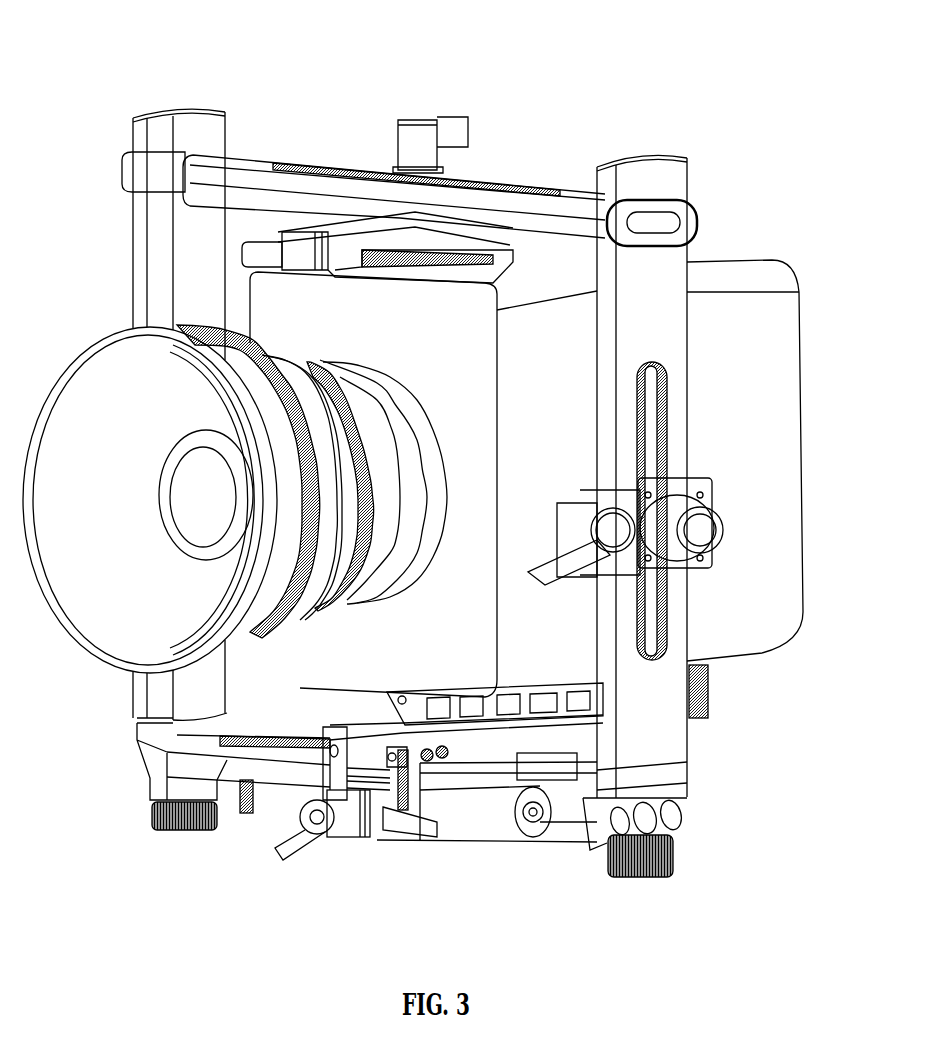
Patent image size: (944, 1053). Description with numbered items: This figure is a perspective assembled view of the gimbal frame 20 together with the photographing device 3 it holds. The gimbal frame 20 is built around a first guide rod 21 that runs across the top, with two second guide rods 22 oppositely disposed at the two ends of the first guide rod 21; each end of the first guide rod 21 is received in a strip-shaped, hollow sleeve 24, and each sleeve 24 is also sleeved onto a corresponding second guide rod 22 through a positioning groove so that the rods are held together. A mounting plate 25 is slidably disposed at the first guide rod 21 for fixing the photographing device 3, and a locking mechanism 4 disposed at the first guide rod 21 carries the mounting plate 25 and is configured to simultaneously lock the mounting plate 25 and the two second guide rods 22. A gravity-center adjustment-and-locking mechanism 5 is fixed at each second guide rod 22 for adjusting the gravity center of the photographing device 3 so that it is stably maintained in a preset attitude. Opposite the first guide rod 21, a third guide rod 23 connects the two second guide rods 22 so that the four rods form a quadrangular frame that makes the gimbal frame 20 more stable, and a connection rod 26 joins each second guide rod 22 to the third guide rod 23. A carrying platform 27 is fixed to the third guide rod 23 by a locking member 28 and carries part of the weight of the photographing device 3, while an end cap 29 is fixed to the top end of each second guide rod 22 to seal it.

The photographing device 3 is at (737, 278).
The locking mechanism 4 is at (413, 143).
The gravity-center adjustment-and-locking mechanism 5 is at (677, 522).
The gimbal frame 20 is at (430, 855).
The first guide rod 21 is at (262, 170).
The second guide rod 22 is at (662, 310).
The third guide rod 23 is at (230, 748).
The sleeve 24 is at (137, 177).
The mounting plate 25 is at (472, 243).
The connection rod 26 is at (150, 770).
The carrying platform 27 is at (508, 727).
The locking member 28 is at (342, 817).
The end cap 29 is at (173, 110).